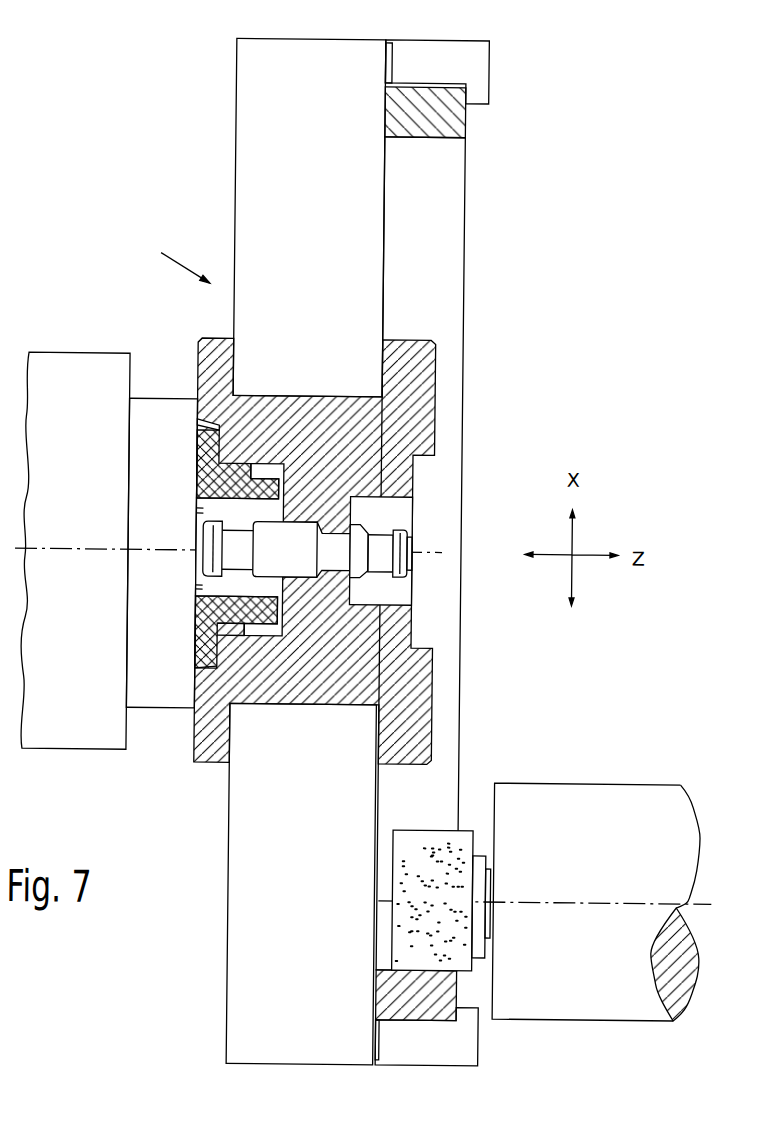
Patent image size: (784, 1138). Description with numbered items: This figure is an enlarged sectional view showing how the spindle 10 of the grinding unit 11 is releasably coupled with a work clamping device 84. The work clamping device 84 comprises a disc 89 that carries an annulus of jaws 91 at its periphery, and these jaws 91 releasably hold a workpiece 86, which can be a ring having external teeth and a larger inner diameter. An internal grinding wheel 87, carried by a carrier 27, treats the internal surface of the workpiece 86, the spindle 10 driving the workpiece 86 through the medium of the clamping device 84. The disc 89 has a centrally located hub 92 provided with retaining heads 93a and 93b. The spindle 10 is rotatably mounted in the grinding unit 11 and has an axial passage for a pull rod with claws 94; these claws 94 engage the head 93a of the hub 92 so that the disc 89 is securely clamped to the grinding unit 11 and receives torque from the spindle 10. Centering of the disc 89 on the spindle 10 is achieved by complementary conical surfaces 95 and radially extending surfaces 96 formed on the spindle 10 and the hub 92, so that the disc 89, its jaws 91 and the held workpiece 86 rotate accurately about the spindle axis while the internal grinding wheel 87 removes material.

The spindle 10 is at (140, 696).
The grinding unit 11 is at (53, 734).
The carrier 27 is at (600, 798).
The work clamping device 84 is at (172, 259).
The workpiece 86 is at (443, 236).
The internal grinding wheel 87 is at (457, 847).
The disc 89 is at (255, 162).
The jaws 91 is at (481, 69).
The hub 92 is at (425, 392).
The retaining head 93a is at (204, 538).
The retaining head 93b is at (400, 562).
The claws 94 is at (206, 608).
The conical surfaces 95 is at (228, 633).
The radially extending surfaces 96 is at (212, 647).